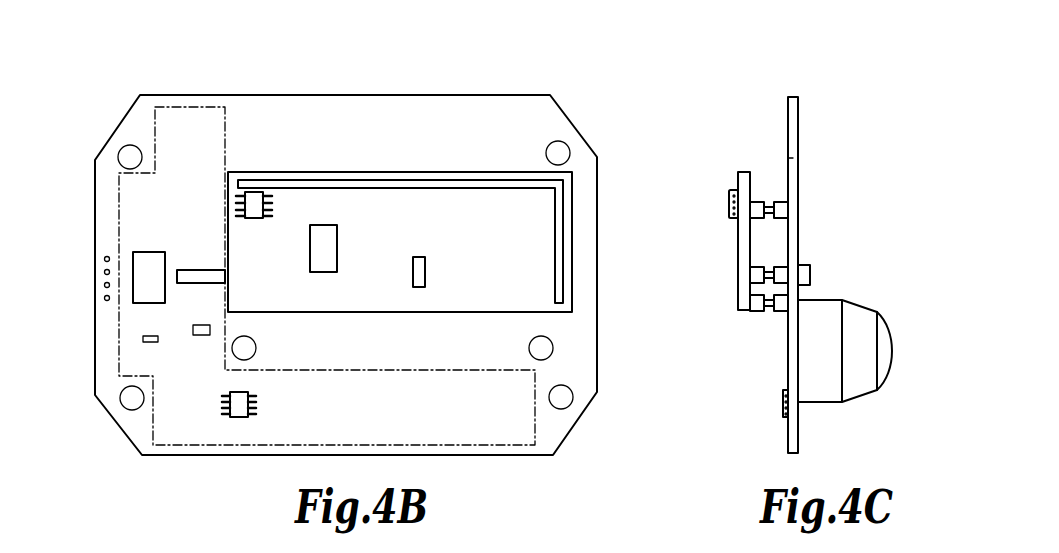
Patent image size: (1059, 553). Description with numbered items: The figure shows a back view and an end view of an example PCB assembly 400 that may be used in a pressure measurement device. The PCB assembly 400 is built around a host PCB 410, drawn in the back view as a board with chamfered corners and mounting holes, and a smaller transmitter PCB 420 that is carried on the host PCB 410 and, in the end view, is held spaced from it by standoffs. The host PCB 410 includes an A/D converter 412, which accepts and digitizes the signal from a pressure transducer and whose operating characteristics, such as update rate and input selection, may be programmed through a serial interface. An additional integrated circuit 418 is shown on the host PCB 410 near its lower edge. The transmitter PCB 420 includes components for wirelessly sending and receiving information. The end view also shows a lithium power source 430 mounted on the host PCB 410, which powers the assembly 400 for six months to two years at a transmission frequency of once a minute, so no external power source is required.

In FIG. 4B, the PCB assembly 400 is at (128, 96).
In FIG. 4C, the PCB assembly 400 is at (751, 130).
In FIG. 4B, the host PCB 410 is at (590, 374).
In FIG. 4C, the host PCB 410 is at (798, 173).
In FIG. 4B, the A/D converter 412 is at (198, 285).
In FIG. 4B, the integrated circuit chip 418 is at (240, 418).
In FIG. 4B, the transmitter PCB 420 is at (457, 236).
In FIG. 4C, the transmitter PCB 420 is at (738, 233).
In FIG. 4C, the lithium power source 430 is at (855, 402).